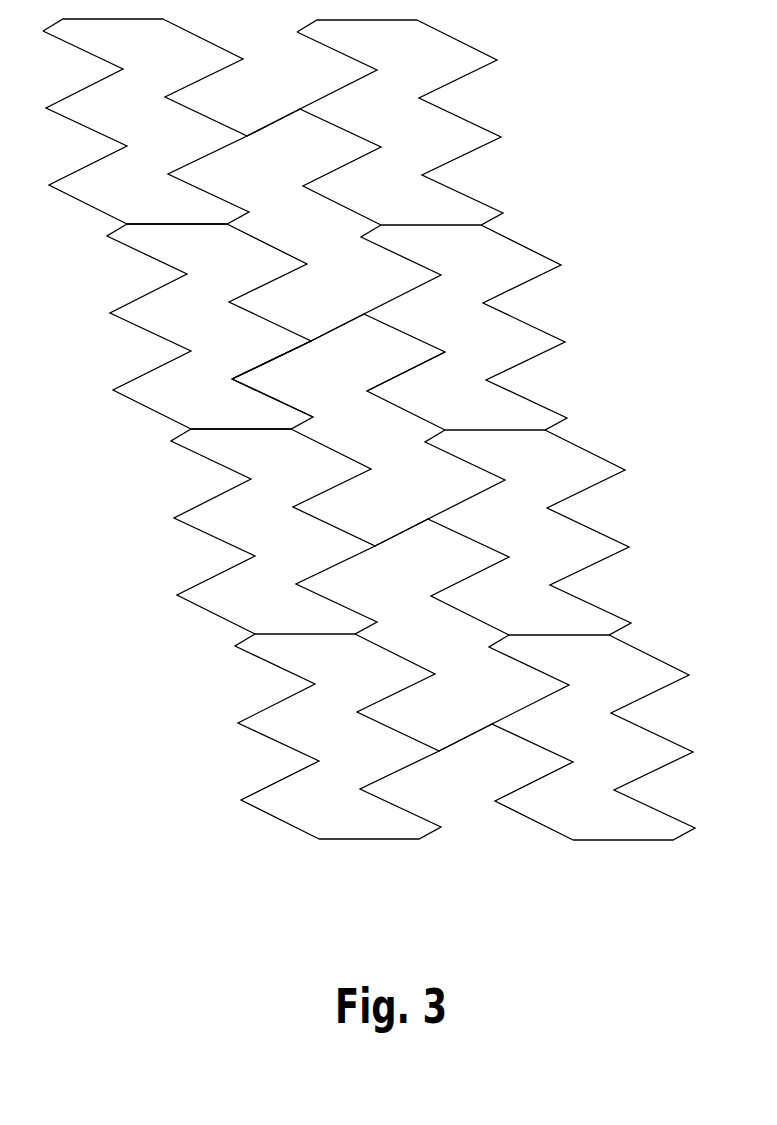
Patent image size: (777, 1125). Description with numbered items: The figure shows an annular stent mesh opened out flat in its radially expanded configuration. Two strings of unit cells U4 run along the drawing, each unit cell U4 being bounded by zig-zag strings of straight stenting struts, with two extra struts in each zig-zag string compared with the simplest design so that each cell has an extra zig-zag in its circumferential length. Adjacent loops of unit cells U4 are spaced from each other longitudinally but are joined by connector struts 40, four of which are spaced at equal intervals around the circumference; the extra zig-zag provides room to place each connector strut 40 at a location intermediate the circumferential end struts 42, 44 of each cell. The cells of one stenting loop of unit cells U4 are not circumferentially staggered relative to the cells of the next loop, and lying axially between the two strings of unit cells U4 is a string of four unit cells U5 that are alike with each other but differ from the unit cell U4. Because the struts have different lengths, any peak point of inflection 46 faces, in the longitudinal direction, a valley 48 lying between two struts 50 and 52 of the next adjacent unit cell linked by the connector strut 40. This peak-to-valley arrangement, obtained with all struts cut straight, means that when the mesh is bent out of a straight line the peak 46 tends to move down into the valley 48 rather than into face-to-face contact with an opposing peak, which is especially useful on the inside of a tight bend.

The connector strut 40 is at (267, 128).
The circumferential end strut 42 is at (192, 225).
The circumferential end strut 44 is at (203, 427).
The peak point of inflection 46 is at (368, 393).
The valley 48 is at (307, 392).
The strut 50 is at (280, 352).
The strut 52 is at (283, 410).
The unit cell U4 is at (172, 140).
The unit cell U5 is at (319, 236).